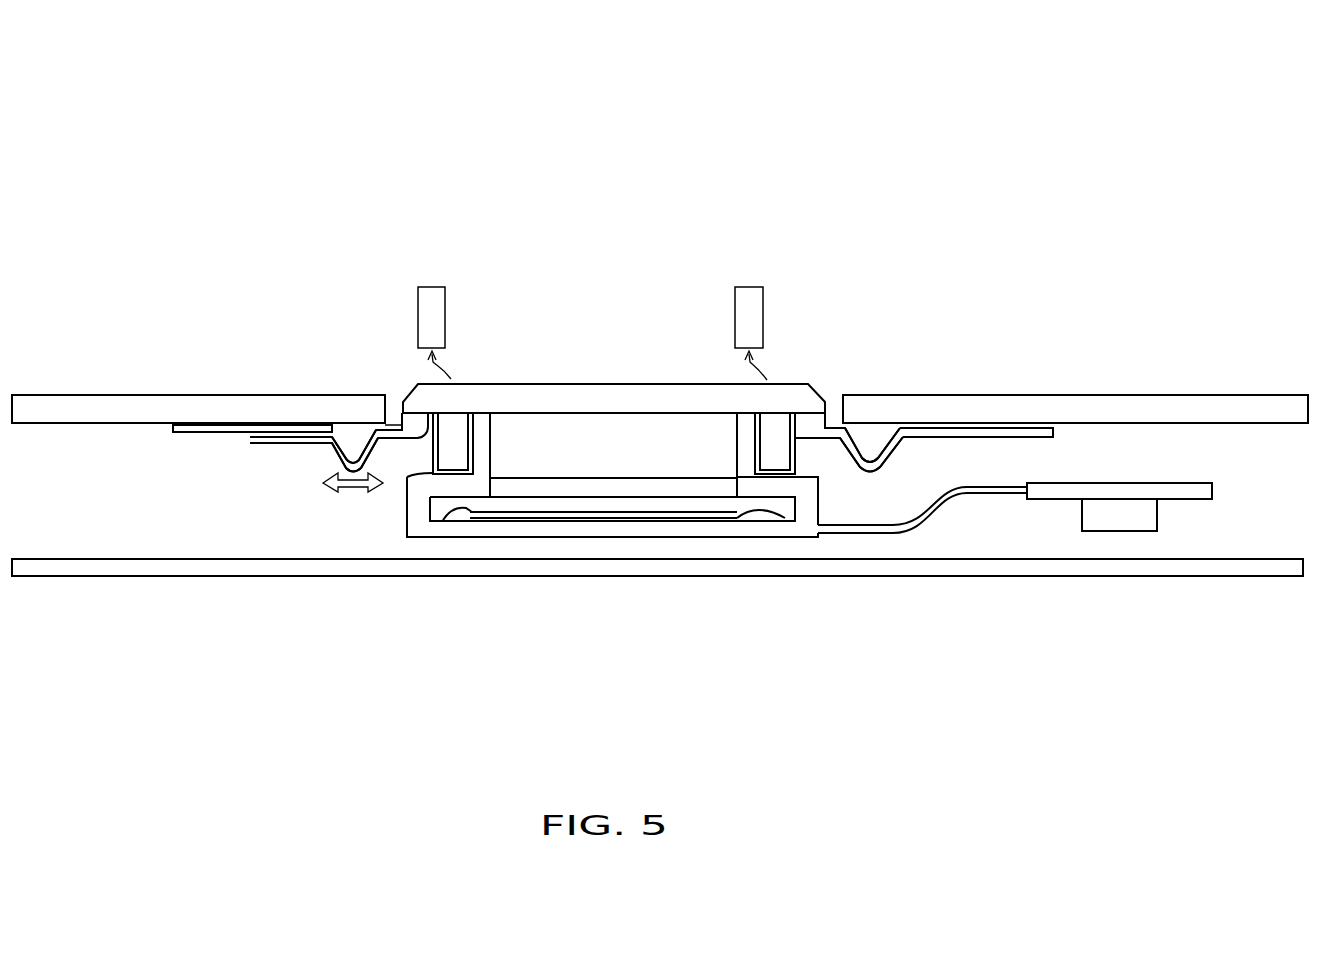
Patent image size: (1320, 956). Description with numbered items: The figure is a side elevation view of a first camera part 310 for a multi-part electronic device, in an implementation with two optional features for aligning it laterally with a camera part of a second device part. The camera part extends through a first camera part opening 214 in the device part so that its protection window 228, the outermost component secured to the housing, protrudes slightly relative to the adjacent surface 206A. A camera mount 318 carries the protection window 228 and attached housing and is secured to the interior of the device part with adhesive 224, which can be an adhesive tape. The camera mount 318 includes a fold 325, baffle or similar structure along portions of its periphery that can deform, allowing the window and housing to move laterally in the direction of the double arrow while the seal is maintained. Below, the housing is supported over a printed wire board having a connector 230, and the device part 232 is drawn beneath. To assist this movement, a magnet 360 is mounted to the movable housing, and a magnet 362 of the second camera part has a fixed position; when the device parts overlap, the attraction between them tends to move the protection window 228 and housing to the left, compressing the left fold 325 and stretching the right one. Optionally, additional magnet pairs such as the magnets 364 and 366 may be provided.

The adjacent surface 206A is at (70, 393).
The first camera part opening 214 is at (396, 406).
The adhesive 224 is at (173, 427).
The protection window 228 is at (500, 382).
The connector 230 is at (1177, 500).
The rear housing wall 232 is at (928, 578).
The first camera part 310 is at (1158, 154).
The camera mount 318 is at (282, 441).
The fold 325 is at (340, 455).
The magnet 360 is at (406, 478).
The second magnet 362 is at (428, 285).
The magnet 364 is at (795, 445).
The magnet 366 is at (752, 285).